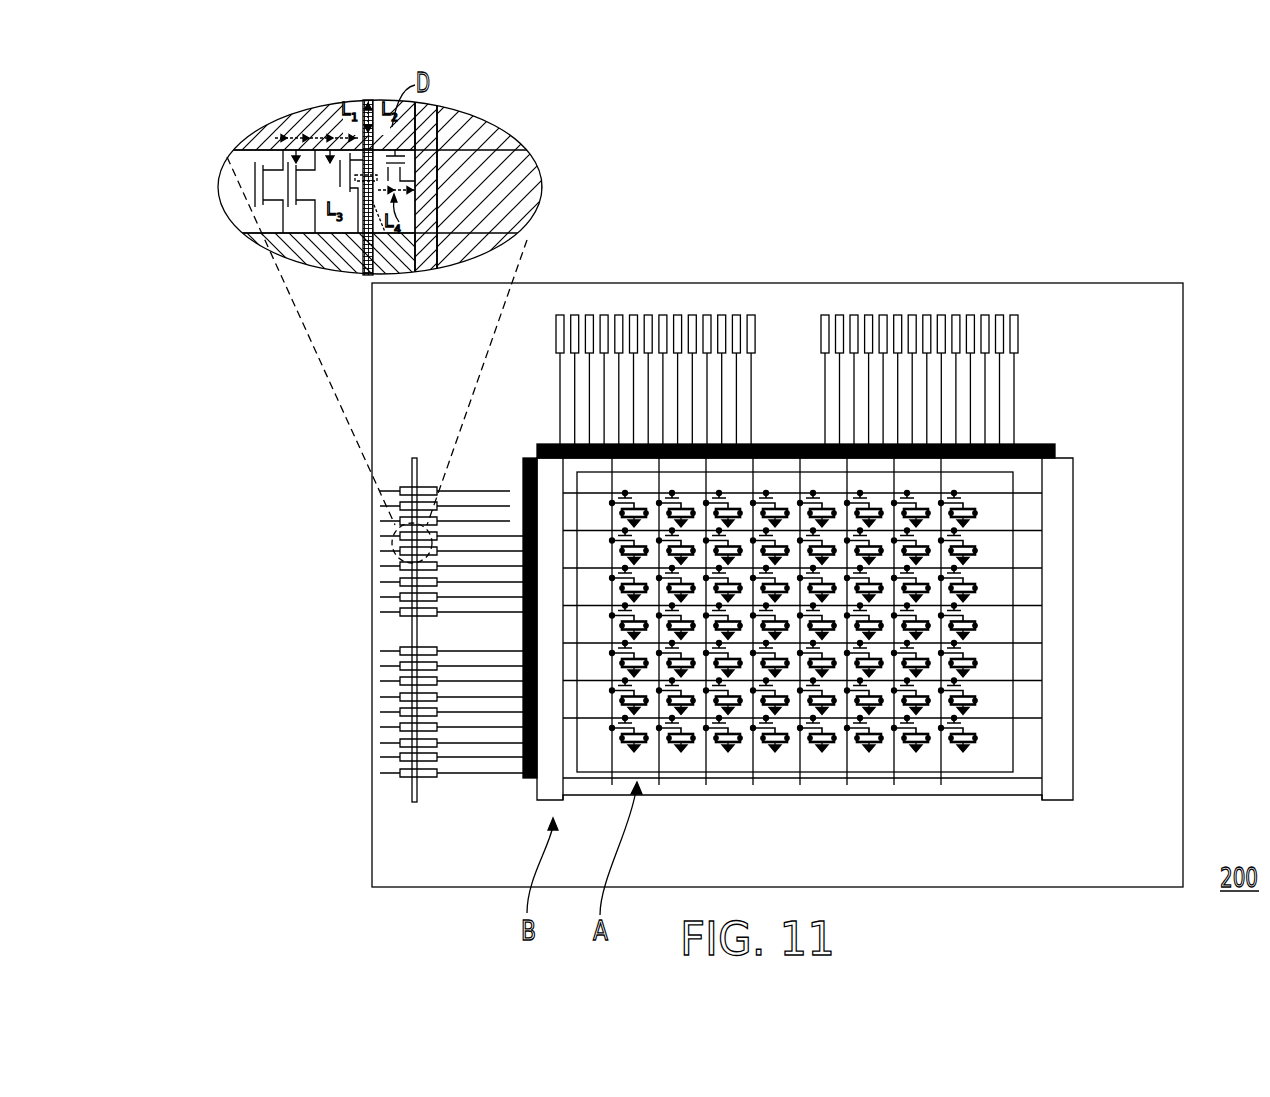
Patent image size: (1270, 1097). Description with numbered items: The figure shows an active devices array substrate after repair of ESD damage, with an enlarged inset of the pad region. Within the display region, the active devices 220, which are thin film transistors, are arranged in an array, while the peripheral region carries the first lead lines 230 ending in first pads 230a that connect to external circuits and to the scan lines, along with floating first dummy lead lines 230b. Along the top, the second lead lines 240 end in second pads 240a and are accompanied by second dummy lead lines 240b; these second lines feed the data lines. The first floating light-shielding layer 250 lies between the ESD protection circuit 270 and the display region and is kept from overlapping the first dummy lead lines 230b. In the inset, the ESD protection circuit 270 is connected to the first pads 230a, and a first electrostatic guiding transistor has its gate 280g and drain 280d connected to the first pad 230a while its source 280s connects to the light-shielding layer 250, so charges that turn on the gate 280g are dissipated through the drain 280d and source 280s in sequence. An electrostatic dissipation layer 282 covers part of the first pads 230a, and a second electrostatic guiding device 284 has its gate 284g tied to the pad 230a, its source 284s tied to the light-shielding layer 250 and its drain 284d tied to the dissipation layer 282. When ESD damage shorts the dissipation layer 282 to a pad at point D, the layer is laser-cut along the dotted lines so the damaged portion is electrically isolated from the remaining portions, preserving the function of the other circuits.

The active device 220 is at (966, 724).
The first lead line 230 is at (408, 626).
The first pad 230a is at (405, 778).
The first dummy lead line 230b is at (497, 488).
The second lead line 240 is at (853, 321).
The second pad 240a is at (823, 315).
The second dummy lead line 240b is at (1015, 385).
The first floating light-shielding layer 250 is at (520, 202).
The ESD protection circuit 270 is at (250, 190).
The gate 280g is at (332, 152).
The drain 280d is at (352, 160).
The source 280s is at (363, 180).
The electrostatic dissipation layer 282 is at (371, 106).
The second electrostatic guiding device 284 is at (492, 151).
The drain 284d is at (418, 150).
The gate 284g is at (398, 160).
The source 284s is at (402, 177).